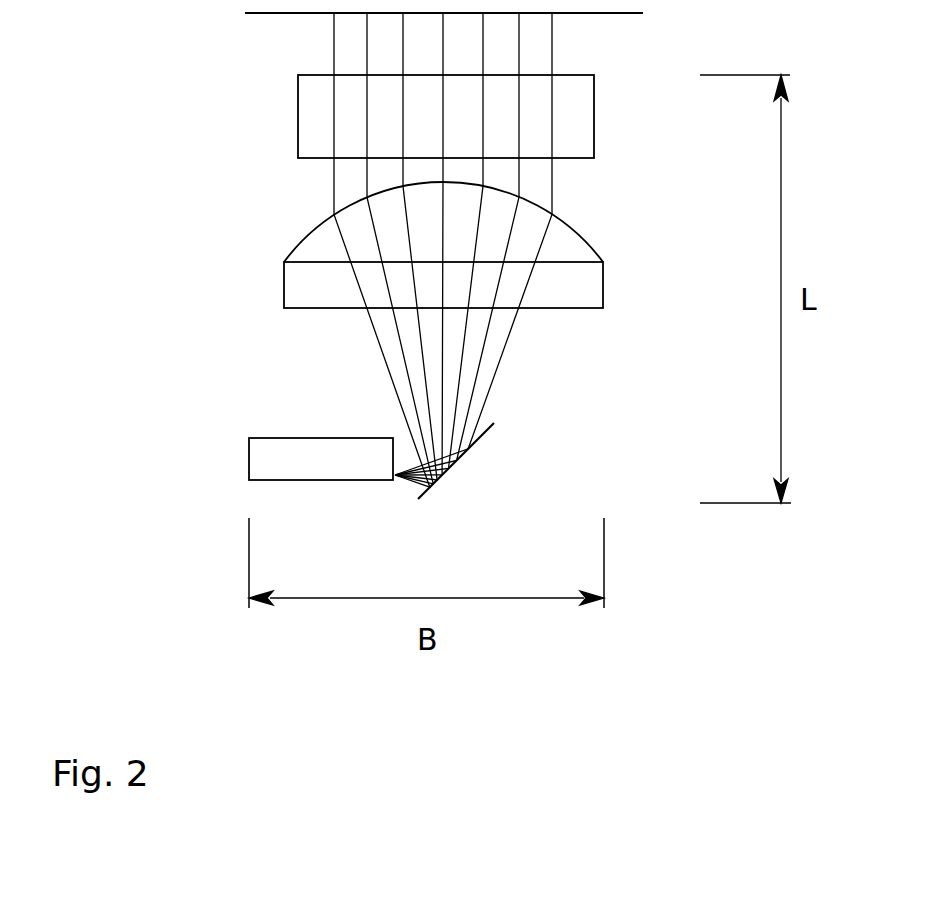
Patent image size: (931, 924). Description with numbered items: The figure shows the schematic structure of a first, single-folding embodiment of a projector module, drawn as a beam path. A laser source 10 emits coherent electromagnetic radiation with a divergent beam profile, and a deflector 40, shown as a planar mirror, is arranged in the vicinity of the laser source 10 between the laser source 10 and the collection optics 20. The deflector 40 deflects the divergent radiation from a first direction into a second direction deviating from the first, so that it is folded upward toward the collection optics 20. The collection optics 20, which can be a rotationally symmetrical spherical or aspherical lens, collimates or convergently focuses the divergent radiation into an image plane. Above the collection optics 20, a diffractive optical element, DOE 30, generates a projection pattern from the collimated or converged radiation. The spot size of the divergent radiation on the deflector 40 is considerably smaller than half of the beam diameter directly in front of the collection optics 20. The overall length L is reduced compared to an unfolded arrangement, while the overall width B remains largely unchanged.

The laser source 10 is at (305, 452).
The collection optics 20 is at (572, 290).
The diffractive optical element (DOE) 30 is at (572, 122).
The deflector 40 is at (490, 425).